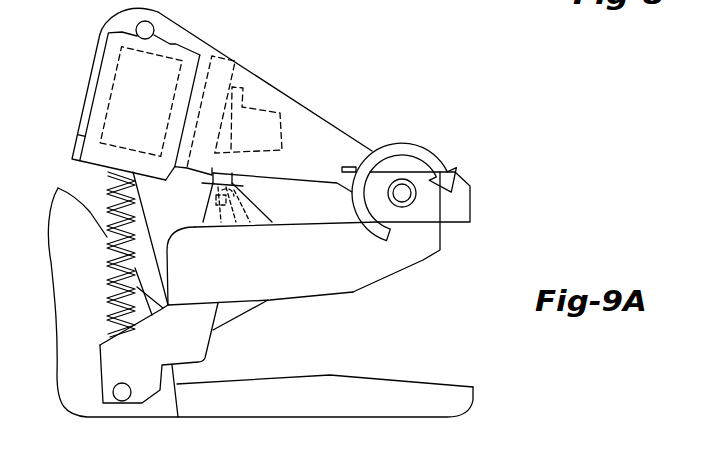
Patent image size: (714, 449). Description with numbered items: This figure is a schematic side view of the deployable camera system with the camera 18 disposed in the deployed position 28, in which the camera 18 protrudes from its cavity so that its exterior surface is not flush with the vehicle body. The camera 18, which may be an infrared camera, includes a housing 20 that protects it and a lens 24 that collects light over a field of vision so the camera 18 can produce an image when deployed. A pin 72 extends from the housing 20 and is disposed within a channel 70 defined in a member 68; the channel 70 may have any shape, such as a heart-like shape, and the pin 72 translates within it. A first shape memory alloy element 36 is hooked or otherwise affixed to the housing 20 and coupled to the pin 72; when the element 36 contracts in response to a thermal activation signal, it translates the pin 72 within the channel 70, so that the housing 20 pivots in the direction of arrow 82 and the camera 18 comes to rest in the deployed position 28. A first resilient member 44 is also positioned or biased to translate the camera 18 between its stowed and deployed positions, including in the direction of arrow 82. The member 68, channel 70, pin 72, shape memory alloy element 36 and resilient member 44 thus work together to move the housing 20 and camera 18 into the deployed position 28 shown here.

The camera 18 is at (189, 60).
The housing 20 is at (258, 83).
The lens 24 is at (88, 85).
The deployed position 28 is at (40, 178).
The first shape memory alloy element 36 is at (103, 258).
The first resilient member 44 is at (349, 166).
The member 68 is at (212, 213).
The channel 70 is at (244, 213).
The pin 72 is at (243, 174).
The arrow 82 is at (442, 150).